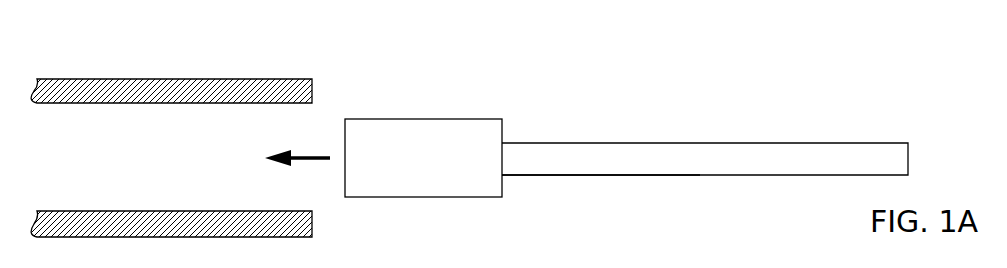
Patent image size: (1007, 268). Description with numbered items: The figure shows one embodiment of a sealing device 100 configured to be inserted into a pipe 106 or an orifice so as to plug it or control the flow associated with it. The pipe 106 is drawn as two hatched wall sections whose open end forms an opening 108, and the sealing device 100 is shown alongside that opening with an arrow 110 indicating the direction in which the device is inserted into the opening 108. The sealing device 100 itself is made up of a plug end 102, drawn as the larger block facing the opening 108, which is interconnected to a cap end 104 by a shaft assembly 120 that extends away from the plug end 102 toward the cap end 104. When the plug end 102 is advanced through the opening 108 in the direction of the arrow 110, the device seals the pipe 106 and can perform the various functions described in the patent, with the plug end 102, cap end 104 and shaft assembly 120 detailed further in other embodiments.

The sealing device 100 is at (626, 93).
The plug end 102 is at (423, 115).
The cap end 104 is at (891, 140).
The pipe 106 is at (234, 76).
The opening 108 is at (302, 127).
The arrow 110 is at (313, 161).
The shaft assembly 120 is at (596, 178).